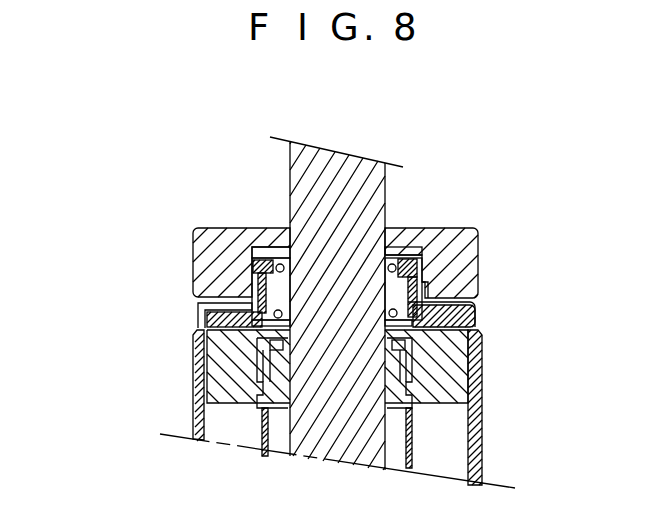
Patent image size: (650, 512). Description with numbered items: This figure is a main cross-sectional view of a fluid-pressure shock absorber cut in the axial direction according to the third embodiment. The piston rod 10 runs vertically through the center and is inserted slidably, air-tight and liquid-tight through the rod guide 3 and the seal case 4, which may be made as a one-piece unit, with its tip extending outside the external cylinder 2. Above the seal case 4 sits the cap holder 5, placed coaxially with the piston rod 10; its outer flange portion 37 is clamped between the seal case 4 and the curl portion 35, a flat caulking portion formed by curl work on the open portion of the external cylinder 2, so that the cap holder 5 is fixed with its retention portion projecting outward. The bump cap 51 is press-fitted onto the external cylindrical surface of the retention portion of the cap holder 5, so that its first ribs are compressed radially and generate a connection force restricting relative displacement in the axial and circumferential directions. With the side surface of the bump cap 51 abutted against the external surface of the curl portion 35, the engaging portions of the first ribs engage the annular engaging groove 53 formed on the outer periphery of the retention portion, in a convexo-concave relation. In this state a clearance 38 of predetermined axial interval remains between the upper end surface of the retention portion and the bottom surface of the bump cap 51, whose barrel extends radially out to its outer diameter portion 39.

The piston rod 10 is at (310, 163).
The clearance 38 is at (262, 250).
The bump cap 51 is at (190, 253).
The cap holder 5 is at (255, 268).
The curl portion 35 is at (198, 301).
The outer flange portion 37 is at (198, 323).
The external cylinder 2 is at (193, 407).
The rod guide 3 is at (252, 405).
The outer diameter portion 39 is at (480, 255).
The annular engaging groove 53 is at (428, 283).
The seal case 4 is at (447, 379).